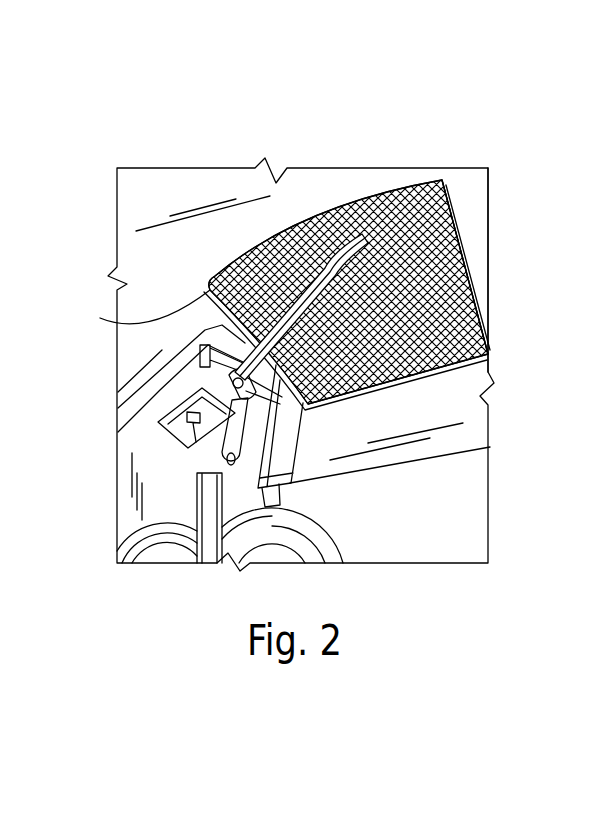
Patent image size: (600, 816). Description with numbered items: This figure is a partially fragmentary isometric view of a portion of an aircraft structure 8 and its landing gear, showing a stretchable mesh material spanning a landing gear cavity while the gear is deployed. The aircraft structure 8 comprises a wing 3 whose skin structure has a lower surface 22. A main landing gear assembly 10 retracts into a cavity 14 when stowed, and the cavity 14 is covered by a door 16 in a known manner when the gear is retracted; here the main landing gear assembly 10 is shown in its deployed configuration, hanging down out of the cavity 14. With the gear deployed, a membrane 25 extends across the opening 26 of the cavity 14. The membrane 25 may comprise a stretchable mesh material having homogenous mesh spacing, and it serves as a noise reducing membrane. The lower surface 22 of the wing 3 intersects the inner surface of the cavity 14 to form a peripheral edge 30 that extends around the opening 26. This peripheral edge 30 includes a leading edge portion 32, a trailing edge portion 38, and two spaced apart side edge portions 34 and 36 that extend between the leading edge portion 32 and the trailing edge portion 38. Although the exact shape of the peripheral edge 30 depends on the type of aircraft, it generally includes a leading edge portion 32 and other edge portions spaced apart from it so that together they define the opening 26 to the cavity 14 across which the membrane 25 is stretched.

The wing 3 is at (473, 193).
The aircraft structure 8 is at (599, 398).
The main landing gear assembly 10 is at (195, 502).
The cavity 14 is at (466, 262).
The door 16 is at (148, 370).
The lower surface 22 is at (304, 182).
The membrane 25 is at (348, 241).
The opening 26 is at (473, 292).
The peripheral edge 30 is at (348, 241).
The leading edge portion 32 is at (317, 213).
The side edge portion 34 is at (459, 243).
The side edge portion 36 is at (120, 325).
The trailing edge portion 38 is at (388, 390).